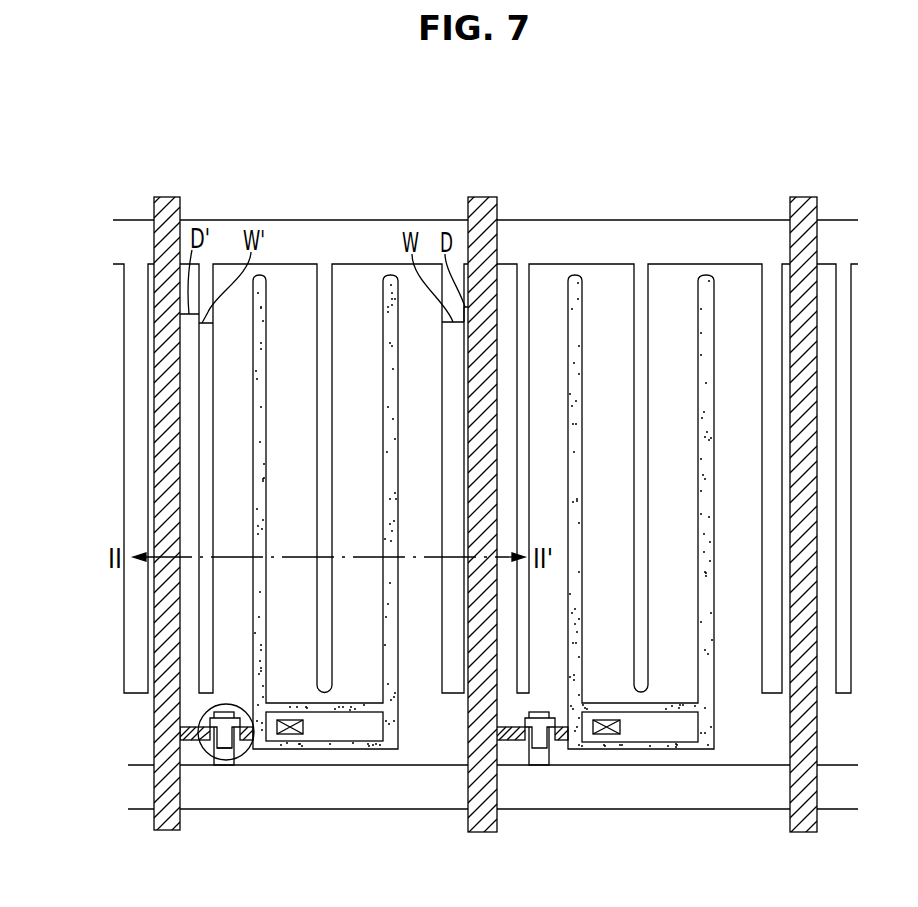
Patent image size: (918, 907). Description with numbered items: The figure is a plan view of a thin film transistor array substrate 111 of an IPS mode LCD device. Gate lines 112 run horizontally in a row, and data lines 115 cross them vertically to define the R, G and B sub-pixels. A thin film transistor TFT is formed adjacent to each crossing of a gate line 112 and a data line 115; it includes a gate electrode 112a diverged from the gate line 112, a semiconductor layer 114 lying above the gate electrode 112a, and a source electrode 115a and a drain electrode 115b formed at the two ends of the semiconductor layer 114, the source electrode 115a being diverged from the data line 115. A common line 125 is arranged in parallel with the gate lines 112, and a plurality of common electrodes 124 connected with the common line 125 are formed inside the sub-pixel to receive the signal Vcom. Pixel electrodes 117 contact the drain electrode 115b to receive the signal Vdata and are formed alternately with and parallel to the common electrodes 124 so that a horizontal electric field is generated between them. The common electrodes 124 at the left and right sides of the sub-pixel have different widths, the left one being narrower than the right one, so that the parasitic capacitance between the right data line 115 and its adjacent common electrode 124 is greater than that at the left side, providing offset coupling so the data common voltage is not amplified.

The thin film transistor array substrate 111 is at (662, 110).
The gate line 112 is at (378, 787).
The gate electrode 112a is at (212, 712).
The semiconductor layer 114 is at (225, 760).
The data line 115 is at (162, 496).
The source electrode 115a is at (211, 752).
The drain electrode 115b is at (244, 752).
The pixel electrode 117 is at (257, 435).
The common electrode 124 is at (322, 388).
The common line 125 is at (227, 240).
The thin film transistor TFT is at (200, 718).